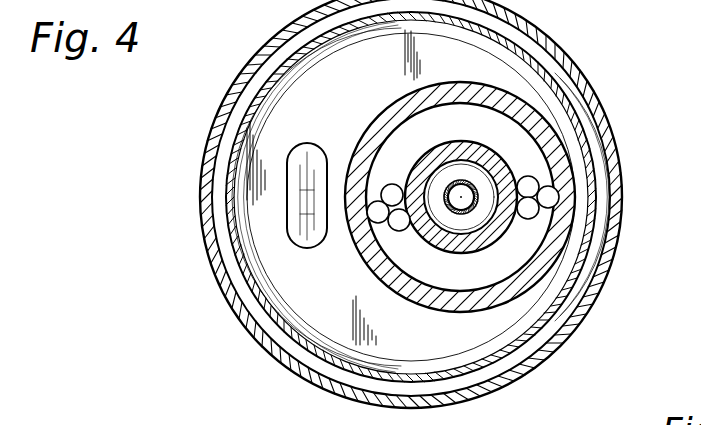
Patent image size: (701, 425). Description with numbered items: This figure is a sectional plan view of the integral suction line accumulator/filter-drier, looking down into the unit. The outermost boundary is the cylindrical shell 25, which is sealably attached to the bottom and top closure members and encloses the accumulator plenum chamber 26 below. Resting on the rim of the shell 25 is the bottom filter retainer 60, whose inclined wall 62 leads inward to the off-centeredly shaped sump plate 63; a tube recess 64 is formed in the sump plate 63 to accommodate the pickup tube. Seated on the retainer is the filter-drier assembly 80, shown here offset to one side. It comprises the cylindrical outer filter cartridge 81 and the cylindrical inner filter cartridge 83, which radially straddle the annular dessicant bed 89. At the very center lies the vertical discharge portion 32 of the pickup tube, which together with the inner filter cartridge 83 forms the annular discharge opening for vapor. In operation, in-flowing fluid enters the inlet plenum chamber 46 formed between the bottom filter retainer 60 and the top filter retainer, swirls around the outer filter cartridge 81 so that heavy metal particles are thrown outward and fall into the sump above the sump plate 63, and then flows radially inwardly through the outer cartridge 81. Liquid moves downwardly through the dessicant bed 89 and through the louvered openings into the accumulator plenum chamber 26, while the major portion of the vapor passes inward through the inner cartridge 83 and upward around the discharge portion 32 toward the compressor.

The cylindrical shell 25 is at (567, 343).
The accumulator plenum chamber 26 is at (230, 264).
The vertical discharge portion 32 is at (473, 185).
The inlet plenum chamber 46 is at (355, 72).
The bottom filter retainer 60 is at (563, 50).
The inclined wall 62 is at (392, 371).
The sump plate 63 is at (372, 304).
The tube recess 64 is at (304, 149).
The filter-drier assembly 80 is at (571, 158).
The cylindrical outer filter cartridge 81 is at (567, 243).
The cylindrical inner filter cartridge 83 is at (458, 143).
The annular dessicant bed 89 is at (394, 232).